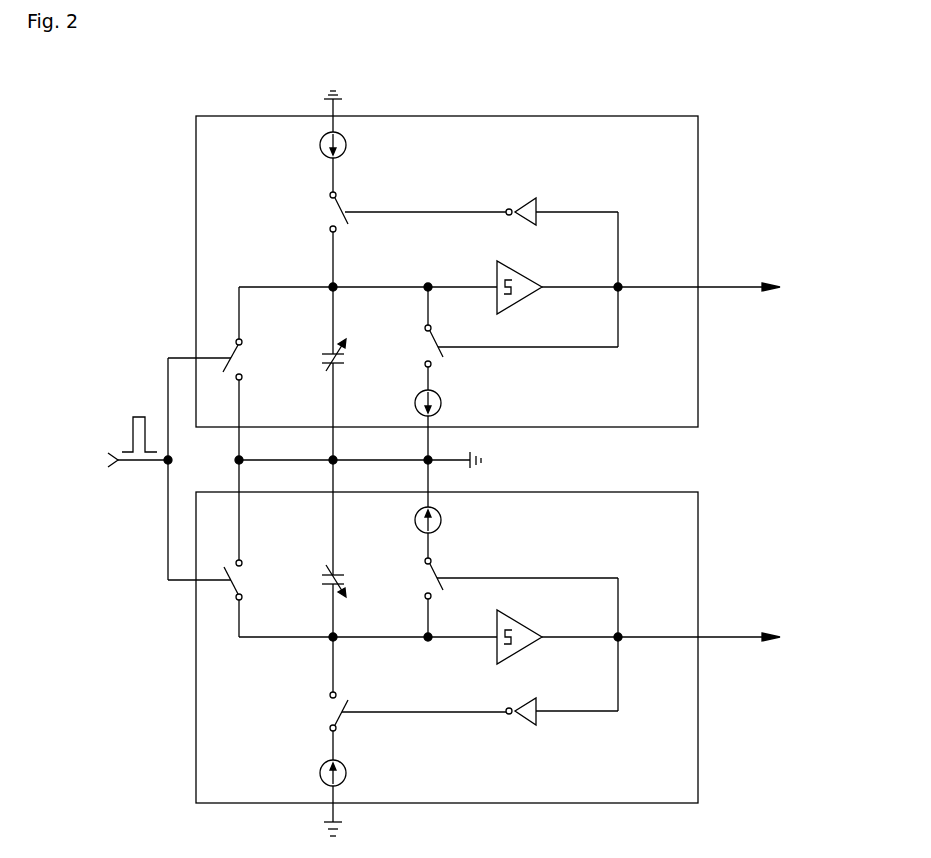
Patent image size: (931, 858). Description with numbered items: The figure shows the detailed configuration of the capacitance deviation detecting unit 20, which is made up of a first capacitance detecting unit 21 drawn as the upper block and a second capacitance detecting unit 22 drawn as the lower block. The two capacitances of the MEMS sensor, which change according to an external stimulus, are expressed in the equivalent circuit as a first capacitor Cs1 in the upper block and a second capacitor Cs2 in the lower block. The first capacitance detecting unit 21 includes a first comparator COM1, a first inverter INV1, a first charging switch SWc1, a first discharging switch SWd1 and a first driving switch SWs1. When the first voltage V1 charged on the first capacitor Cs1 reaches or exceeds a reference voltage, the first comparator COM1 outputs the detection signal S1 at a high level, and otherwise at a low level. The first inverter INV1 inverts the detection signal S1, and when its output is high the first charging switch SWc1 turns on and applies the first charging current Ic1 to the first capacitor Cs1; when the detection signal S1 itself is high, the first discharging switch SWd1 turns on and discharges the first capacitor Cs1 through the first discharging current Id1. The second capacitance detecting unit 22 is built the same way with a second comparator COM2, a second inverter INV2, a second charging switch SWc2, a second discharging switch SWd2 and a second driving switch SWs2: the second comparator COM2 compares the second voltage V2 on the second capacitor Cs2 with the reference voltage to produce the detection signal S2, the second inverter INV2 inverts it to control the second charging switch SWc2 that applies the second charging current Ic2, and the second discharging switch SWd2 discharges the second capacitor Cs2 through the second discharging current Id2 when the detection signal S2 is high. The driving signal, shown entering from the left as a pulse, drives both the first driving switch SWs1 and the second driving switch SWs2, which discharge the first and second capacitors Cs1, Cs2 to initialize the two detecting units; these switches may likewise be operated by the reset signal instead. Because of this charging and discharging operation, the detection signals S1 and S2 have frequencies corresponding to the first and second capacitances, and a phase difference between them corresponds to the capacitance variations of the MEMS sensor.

The capacitance deviation detecting unit 20 is at (672, 63).
The first capacitance detecting unit 21 is at (447, 116).
The second capacitance detecting unit 22 is at (698, 528).
The first charging current Ic1 is at (353, 145).
The second charging current Ic2 is at (352, 776).
The first discharging current Id1 is at (446, 403).
The second discharging current Id2 is at (446, 520).
The first charging switch SWc1 is at (418, 216).
The second charging switch SWc2 is at (418, 707).
The first discharging switch SWd1 is at (521, 343).
The second discharging switch SWd2 is at (521, 576).
The first driving switch SWs1 is at (237, 359).
The second driving switch SWs2 is at (237, 580).
The first capacitor Cs1 is at (355, 373).
The second capacitor Cs2 is at (355, 601).
The first comparator COM1 is at (548, 287).
The second comparator COM2 is at (537, 643).
The first inverter INV1 is at (562, 218).
The second inverter INV2 is at (560, 726).
The first voltage V1 is at (347, 276).
The second voltage V2 is at (348, 649).
The first detection signal S1 is at (677, 286).
The second detection signal S2 is at (677, 638).